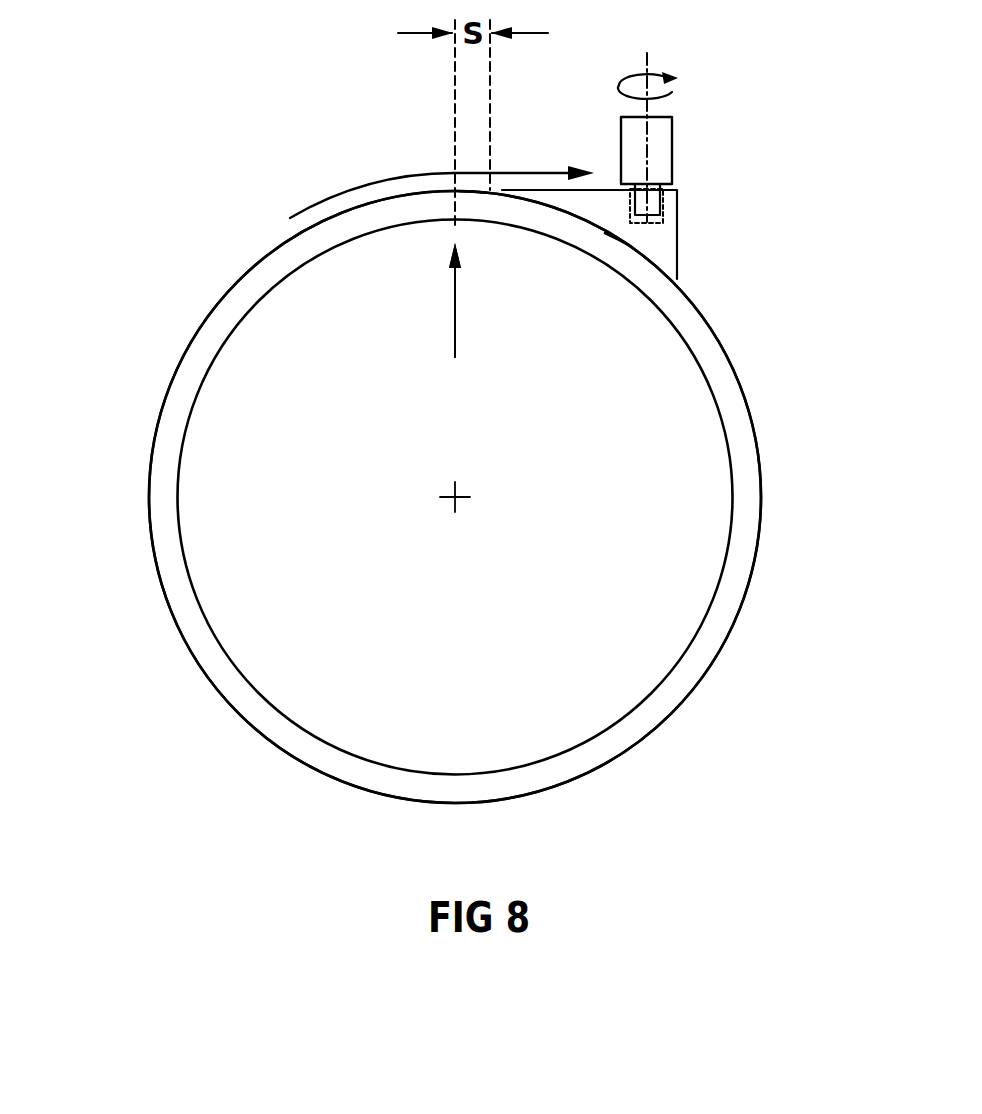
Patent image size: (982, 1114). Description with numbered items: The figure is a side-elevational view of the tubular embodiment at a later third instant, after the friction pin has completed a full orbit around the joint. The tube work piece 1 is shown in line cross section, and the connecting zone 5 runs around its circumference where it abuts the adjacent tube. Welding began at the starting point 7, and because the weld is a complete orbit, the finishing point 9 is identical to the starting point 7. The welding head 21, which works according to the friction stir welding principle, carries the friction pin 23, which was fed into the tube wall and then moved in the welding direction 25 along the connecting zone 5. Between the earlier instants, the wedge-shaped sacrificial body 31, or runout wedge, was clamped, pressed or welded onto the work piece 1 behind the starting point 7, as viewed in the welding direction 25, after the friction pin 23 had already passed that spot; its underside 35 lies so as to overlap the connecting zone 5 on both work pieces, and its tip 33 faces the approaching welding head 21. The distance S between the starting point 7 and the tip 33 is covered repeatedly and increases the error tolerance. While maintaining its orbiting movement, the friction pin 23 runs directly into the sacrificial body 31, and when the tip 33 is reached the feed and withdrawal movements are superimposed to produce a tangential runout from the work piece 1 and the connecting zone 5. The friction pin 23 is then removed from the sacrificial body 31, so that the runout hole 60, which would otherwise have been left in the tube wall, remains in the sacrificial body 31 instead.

The work piece 1 is at (176, 593).
The connecting zone 5 is at (178, 396).
The starting point 7 is at (455, 323).
The finishing point 9 is at (455, 323).
The welding head 21 is at (621, 146).
The friction pin 23 is at (652, 209).
The welding direction 25 is at (352, 186).
The sacrificial body 31 is at (658, 248).
The tip 33 is at (473, 192).
The underside 35 is at (620, 242).
The runout hole 60 is at (663, 200).